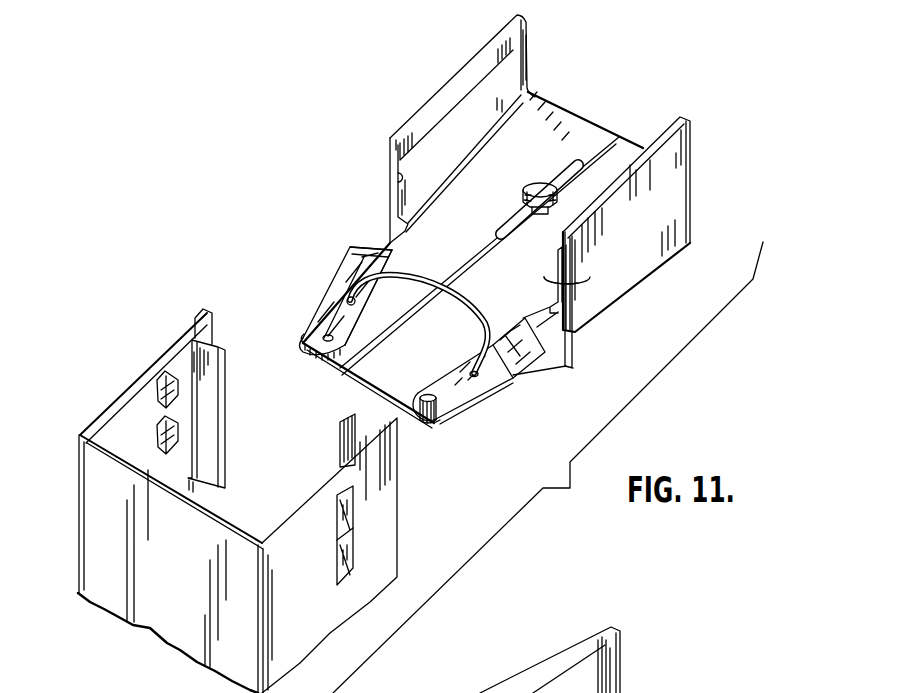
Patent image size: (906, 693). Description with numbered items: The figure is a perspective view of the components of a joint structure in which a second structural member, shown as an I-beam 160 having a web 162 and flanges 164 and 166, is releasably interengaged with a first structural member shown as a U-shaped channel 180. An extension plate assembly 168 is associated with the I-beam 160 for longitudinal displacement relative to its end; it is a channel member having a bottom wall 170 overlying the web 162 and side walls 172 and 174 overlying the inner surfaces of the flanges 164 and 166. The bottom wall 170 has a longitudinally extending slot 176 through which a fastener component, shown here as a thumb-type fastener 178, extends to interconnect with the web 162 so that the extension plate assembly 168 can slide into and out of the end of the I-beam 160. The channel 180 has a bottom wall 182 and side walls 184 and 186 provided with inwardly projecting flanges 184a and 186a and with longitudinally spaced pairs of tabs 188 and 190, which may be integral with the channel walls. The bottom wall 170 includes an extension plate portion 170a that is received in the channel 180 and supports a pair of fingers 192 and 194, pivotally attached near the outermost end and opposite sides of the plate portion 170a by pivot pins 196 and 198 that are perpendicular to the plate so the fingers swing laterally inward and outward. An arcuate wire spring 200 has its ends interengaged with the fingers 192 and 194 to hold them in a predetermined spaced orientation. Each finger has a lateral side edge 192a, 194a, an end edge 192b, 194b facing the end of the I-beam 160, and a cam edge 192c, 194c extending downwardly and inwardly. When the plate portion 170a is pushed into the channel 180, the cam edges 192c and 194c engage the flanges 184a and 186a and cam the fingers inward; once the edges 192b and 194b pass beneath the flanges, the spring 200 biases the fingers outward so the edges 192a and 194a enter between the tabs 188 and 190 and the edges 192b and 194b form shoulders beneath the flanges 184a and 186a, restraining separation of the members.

The I-beam 160 is at (442, 86).
The web 162 is at (562, 117).
The flange 164 is at (453, 129).
The flange 166 is at (677, 142).
The extension plate assembly 168 is at (306, 245).
The bottom wall 170 is at (468, 259).
The extension plate portion 170a is at (383, 370).
The side wall 172 is at (398, 178).
The side wall 174 is at (562, 280).
The slot 176 is at (512, 222).
The thumb screw 178 is at (542, 185).
The U-shaped channel 180 is at (131, 364).
The bottom wall 182 is at (216, 527).
The side wall 184 is at (131, 384).
The inwardly projecting flange 184a is at (203, 313).
The side wall 186 is at (353, 553).
The inwardly projecting flange 186a is at (340, 433).
The tabs 188 is at (165, 408).
The tabs 190 is at (352, 560).
The finger 192 is at (321, 278).
The lateral side edge 192a is at (340, 258).
The end edge 192b is at (379, 247).
The lateral side edge 192c is at (322, 307).
The finger 194 is at (551, 331).
The lateral side edge 194a is at (573, 367).
The end edge 194b is at (522, 340).
The lateral side edge 194c is at (480, 393).
The pivot pin 196 is at (315, 345).
The pivot pin 198 is at (433, 412).
The arcuate wire spring 200 is at (409, 272).